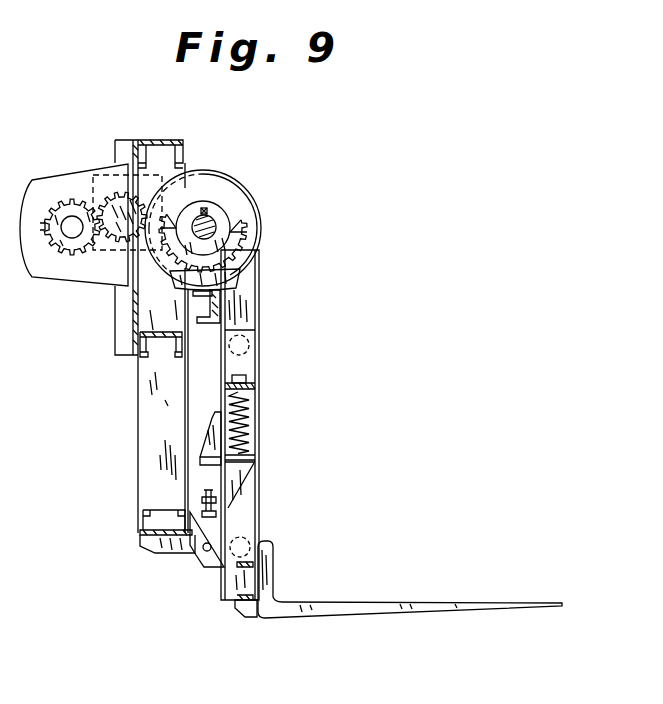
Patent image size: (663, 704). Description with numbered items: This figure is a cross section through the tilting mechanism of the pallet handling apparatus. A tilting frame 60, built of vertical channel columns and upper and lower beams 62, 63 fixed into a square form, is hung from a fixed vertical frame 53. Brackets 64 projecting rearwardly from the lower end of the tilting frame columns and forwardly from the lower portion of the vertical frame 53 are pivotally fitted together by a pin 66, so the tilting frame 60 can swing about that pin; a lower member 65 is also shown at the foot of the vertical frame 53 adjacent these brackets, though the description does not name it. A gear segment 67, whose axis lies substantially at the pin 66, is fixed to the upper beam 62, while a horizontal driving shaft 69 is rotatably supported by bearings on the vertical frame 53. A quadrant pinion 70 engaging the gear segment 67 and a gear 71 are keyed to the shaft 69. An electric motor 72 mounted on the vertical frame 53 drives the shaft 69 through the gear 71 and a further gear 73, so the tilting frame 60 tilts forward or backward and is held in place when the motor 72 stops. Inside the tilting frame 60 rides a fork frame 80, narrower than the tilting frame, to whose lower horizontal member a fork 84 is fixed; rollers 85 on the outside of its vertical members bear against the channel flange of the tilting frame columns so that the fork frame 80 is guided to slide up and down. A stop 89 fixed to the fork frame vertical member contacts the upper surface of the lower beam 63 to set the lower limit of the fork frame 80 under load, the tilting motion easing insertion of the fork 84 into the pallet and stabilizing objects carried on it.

The vertical frame 53 is at (137, 422).
The tilting frame 60 is at (262, 311).
The upper beam 62 is at (212, 303).
The lower beam 63 is at (215, 472).
The bracket 64 is at (213, 568).
The bracket 65 is at (147, 549).
The pin 66 is at (203, 551).
The gear segment 67 is at (235, 279).
The driving shaft 69 is at (214, 226).
The quadrant pinion 70 is at (240, 237).
The gear 71 is at (227, 173).
The electric motor 72 is at (46, 178).
The gear 73 is at (110, 188).
The fork frame 80 is at (253, 502).
The fork 84 is at (348, 613).
The roller 85 is at (249, 345).
The stop 89 is at (210, 427).